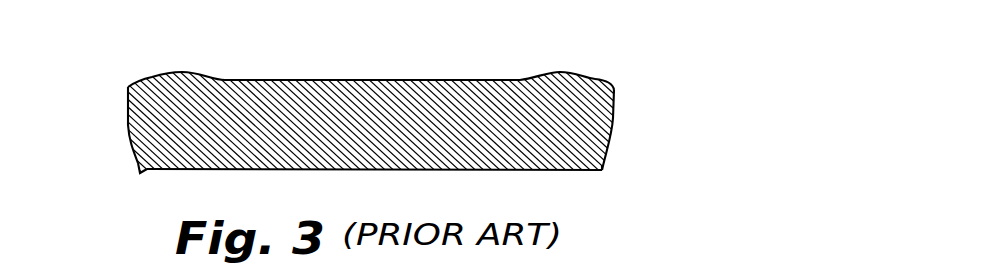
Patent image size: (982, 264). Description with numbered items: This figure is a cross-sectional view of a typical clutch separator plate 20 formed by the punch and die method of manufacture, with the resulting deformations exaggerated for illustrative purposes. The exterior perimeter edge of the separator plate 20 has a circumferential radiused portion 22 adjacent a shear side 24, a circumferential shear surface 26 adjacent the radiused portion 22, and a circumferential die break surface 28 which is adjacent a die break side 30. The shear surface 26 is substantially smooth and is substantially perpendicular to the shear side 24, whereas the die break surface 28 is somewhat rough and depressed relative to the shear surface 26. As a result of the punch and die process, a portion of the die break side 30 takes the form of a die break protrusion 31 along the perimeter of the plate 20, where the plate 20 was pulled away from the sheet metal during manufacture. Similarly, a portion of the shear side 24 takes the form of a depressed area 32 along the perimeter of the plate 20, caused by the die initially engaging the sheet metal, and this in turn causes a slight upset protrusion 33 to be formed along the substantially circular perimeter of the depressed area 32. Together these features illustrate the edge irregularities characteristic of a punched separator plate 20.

The separator plate 20 is at (280, 88).
The radiused portion 22 is at (128, 86).
The shear side 24 is at (407, 80).
The shear surface 26 is at (125, 106).
The die break surface 28 is at (135, 152).
The die break side 30 is at (549, 168).
The die break protrusion 31 is at (152, 172).
The depressed area 32 is at (152, 77).
The upset protrusion 33 is at (181, 72).